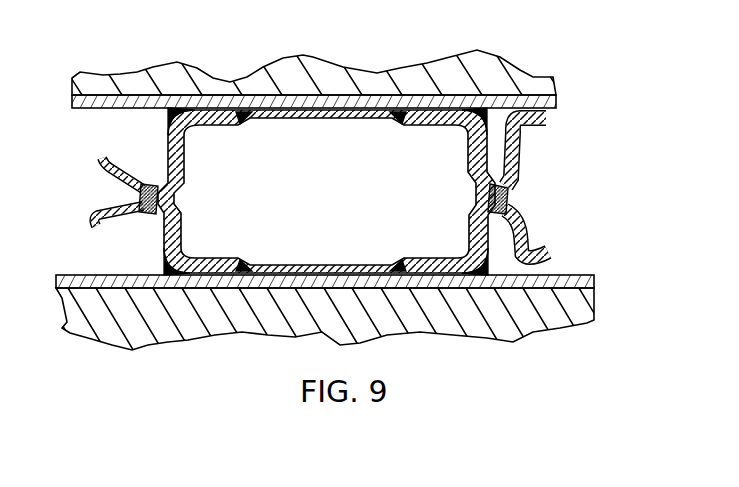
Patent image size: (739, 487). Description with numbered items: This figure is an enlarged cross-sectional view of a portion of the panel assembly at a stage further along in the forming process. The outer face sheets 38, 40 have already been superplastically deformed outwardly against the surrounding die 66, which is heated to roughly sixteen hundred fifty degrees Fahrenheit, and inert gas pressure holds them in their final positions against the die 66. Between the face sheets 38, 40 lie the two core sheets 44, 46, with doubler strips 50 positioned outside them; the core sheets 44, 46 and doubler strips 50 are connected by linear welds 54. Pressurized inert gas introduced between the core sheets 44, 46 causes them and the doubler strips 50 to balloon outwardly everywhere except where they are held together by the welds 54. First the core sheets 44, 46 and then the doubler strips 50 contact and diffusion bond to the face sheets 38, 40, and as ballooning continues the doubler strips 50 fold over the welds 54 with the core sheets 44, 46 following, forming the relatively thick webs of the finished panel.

The face sheet 38 is at (95, 111).
The face sheet 40 is at (94, 273).
The core sheet 44 is at (302, 120).
The core sheet 46 is at (282, 262).
The doubler strip 50 is at (166, 138).
The linear weld 54 is at (146, 180).
The die 66 is at (503, 70).